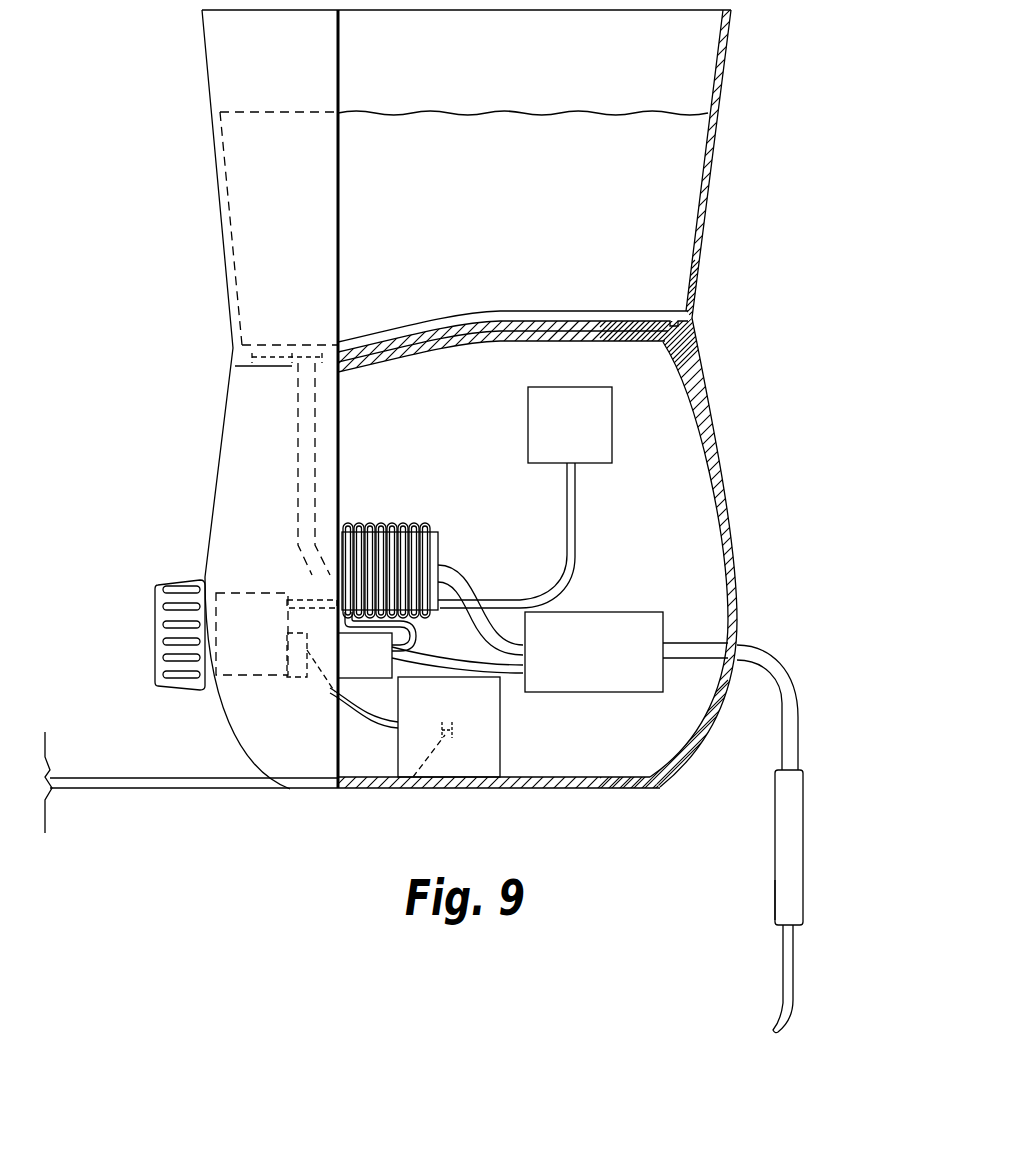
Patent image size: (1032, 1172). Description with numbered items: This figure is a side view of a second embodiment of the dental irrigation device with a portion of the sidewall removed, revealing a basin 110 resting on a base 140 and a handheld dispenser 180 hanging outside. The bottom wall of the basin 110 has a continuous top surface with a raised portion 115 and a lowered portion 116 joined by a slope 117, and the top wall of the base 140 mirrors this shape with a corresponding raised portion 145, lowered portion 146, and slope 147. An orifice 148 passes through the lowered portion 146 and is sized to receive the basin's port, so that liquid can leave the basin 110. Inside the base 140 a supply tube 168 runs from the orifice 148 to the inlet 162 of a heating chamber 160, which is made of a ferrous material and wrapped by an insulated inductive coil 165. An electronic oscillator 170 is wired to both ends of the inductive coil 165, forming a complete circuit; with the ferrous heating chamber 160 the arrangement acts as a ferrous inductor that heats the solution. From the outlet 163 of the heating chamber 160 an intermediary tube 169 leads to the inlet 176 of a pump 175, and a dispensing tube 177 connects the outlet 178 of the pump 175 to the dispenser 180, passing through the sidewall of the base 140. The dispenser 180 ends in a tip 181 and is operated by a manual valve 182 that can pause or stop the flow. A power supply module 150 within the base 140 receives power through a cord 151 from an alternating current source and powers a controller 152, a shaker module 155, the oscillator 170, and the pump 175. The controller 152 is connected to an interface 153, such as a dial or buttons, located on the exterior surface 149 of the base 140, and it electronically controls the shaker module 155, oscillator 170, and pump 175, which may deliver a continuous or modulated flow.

The basin 110 is at (724, 84).
The raised portion 115 is at (688, 313).
The lowered portion 116 is at (328, 355).
The slope 117 is at (490, 316).
The base 140 is at (718, 468).
The raised portion 145 is at (697, 345).
The lowered portion 146 is at (288, 377).
The slope 147 is at (407, 348).
The orifice 148 is at (288, 358).
The exterior surface 149 is at (276, 524).
The power supply module 150 is at (442, 772).
The cord 151 is at (86, 790).
The controller 152 is at (222, 676).
The interface 153 is at (158, 632).
The shaker module 155 is at (612, 428).
The heating chamber 160 is at (440, 530).
The inlet 162 is at (335, 580).
The outlet 163 is at (440, 562).
The inductive coil 165 is at (337, 573).
The supply tube 168 is at (298, 447).
The intermediary tube 169 is at (480, 598).
The oscillator 170 is at (306, 678).
The pump 175 is at (615, 692).
The inlet 176 is at (512, 650).
The dispensing tube 177 is at (800, 722).
The outlet 178 is at (668, 638).
The dispenser 180 is at (806, 848).
The tip 181 is at (793, 1010).
The manual valve 182 is at (790, 893).